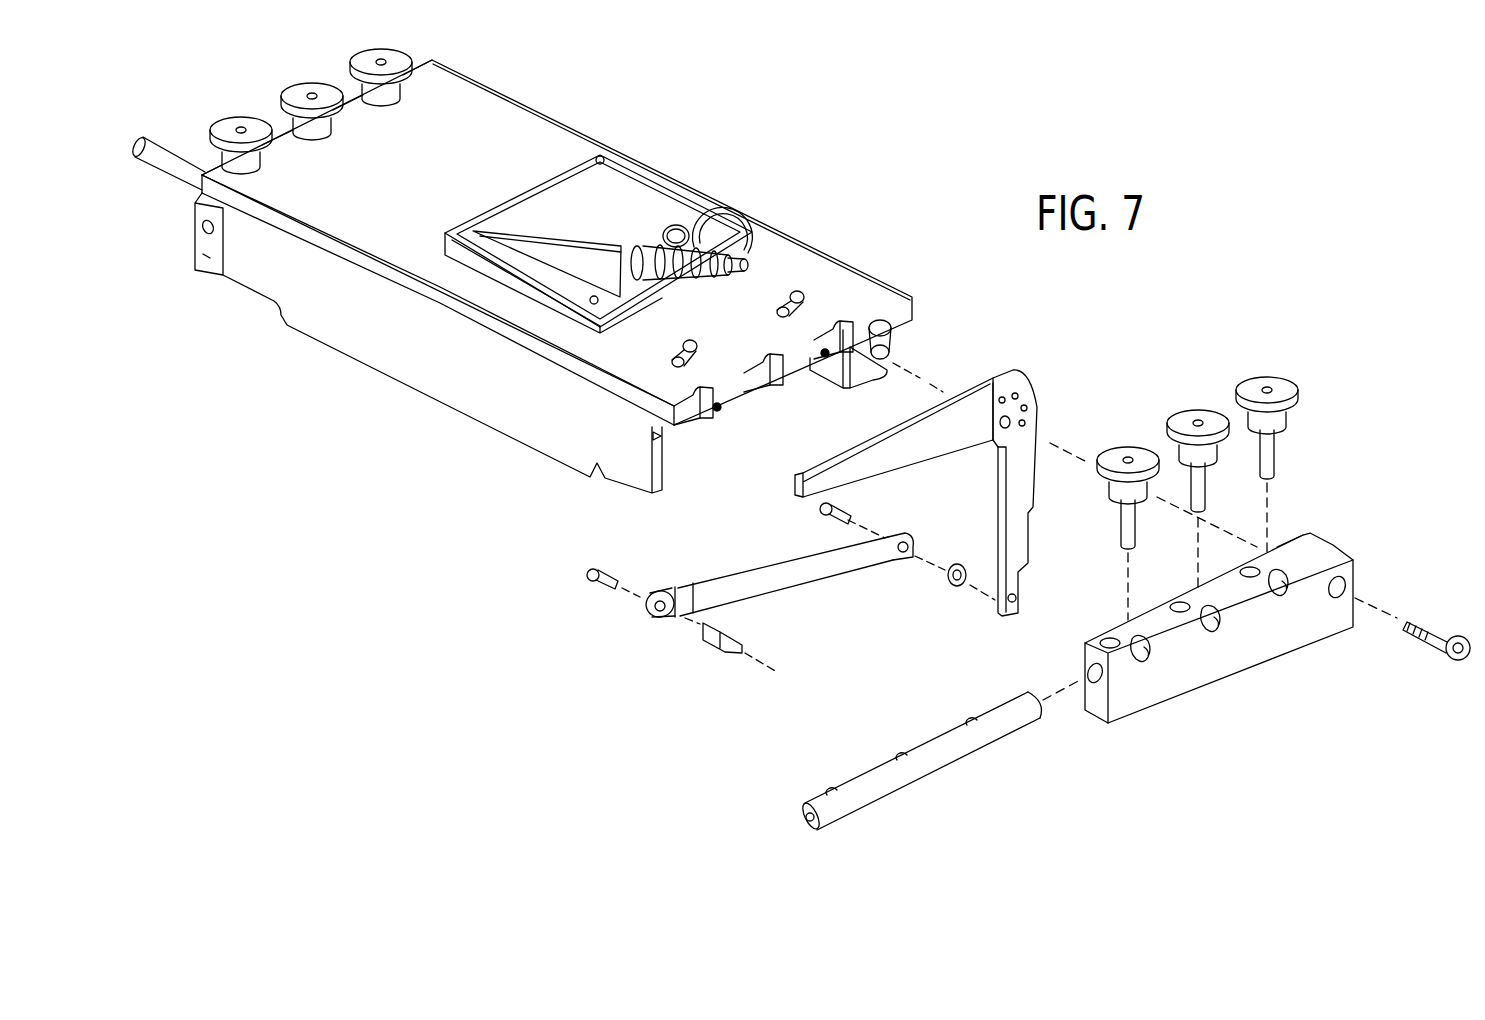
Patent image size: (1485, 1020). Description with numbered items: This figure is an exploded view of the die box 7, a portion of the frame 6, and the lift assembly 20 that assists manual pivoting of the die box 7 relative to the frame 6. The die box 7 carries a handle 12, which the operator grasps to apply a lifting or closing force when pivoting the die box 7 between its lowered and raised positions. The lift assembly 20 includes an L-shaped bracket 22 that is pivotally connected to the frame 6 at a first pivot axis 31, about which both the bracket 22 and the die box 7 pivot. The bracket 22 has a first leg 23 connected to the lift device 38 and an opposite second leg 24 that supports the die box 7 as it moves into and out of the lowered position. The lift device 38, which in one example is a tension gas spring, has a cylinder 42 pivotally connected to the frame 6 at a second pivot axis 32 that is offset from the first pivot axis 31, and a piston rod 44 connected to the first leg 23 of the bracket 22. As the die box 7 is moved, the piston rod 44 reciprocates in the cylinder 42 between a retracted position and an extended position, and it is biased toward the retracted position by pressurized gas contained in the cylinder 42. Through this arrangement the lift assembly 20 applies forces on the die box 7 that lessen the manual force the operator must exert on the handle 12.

The frame 6 is at (1203, 700).
The die box 7 is at (542, 135).
The handle 12 is at (172, 158).
The lift assembly 20 is at (680, 668).
The bracket 22 is at (1015, 380).
The first leg 23 is at (1023, 528).
The second leg 24 is at (902, 440).
The first pivot axis 31 is at (1045, 438).
The second pivot axis 32 is at (630, 600).
The lift device 38 is at (797, 607).
The cylinder 42 is at (787, 557).
The piston rod 44 is at (900, 560).